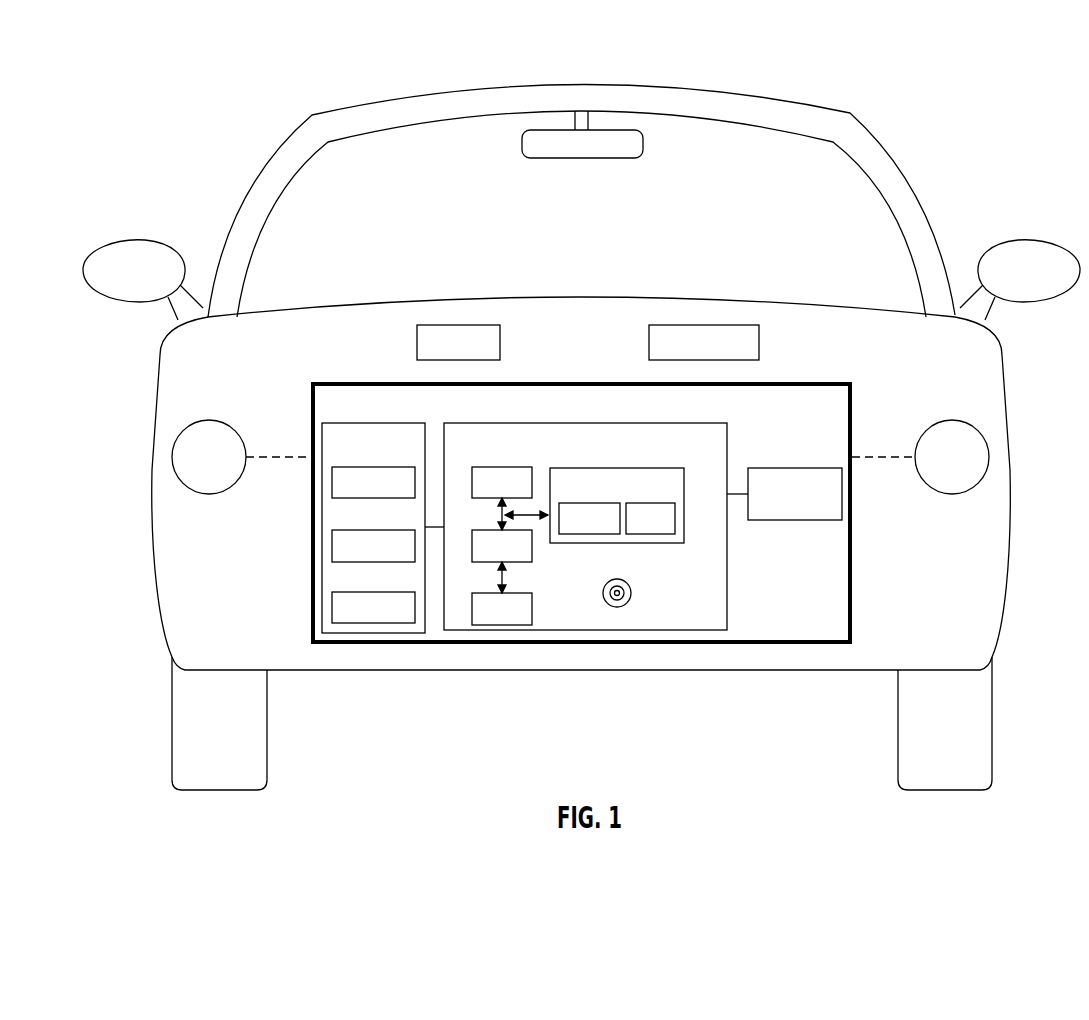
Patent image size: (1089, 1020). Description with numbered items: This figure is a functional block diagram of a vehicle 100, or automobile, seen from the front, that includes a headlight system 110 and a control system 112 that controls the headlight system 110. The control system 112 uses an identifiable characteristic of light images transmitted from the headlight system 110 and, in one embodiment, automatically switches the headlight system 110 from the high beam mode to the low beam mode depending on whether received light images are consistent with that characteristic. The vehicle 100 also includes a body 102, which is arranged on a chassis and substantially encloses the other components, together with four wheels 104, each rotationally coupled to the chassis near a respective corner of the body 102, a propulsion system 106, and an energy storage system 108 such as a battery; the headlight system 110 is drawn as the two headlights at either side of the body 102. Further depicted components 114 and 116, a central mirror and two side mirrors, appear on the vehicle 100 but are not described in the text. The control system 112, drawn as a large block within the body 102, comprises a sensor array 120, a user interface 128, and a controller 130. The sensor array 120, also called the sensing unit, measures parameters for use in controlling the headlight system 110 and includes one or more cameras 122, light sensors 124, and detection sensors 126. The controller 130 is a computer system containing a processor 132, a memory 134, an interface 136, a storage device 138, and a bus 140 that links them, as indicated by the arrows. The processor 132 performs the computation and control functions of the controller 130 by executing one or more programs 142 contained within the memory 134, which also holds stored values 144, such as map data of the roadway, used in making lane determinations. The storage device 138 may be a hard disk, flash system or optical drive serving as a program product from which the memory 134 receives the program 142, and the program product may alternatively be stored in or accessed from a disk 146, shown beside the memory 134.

The vehicle 100 is at (977, 88).
The body 102 is at (157, 532).
The wheels 104 is at (172, 717).
The propulsion system 106 is at (743, 323).
The energy storage system 108 is at (437, 323).
The headlight system 110 is at (212, 422).
The control system 112 is at (340, 381).
The rearview mirror 114 is at (613, 158).
The side mirror 116 is at (140, 237).
The sensor array 120 is at (373, 422).
The cameras 122 is at (332, 482).
The light sensors 124 is at (332, 545).
The detection sensors 126 is at (332, 608).
The user interface 128 is at (788, 467).
The controller 130 is at (693, 422).
The processor 132 is at (505, 465).
The memory 134 is at (663, 467).
The interface 136 is at (520, 562).
The storage device 138 is at (485, 625).
The bus 140 is at (500, 515).
The program 142 is at (588, 535).
The stored values 144 is at (665, 535).
The disk 146 is at (632, 590).